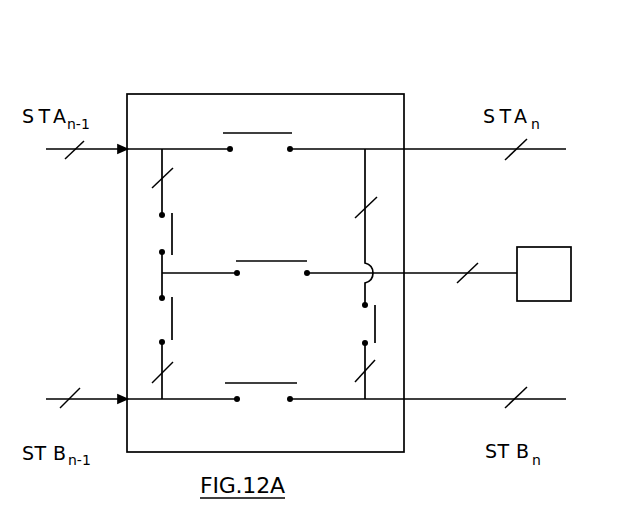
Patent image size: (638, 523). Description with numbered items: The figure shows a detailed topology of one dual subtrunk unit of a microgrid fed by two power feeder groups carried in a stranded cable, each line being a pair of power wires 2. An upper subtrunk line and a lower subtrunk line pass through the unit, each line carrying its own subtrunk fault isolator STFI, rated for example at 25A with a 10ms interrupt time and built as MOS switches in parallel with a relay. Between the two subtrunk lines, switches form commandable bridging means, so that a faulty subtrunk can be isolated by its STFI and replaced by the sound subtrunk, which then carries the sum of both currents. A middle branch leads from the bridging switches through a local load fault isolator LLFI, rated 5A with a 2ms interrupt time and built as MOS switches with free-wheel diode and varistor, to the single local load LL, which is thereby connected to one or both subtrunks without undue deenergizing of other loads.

The power wire pair 2 is at (293, 285).
The subtrunk fault isolator STFI is at (315, 261).
The local load fault isolator LLFI is at (357, 254).
The local load LL is at (544, 274).
The current rating of subtrunk fault isolator 25A is at (282, 273).
The interrupt time of subtrunk fault isolator 10ms is at (260, 267).
The interrupt time of local load fault isolator 2ms is at (272, 271).
The current rating of local load fault isolator 5A is at (272, 282).